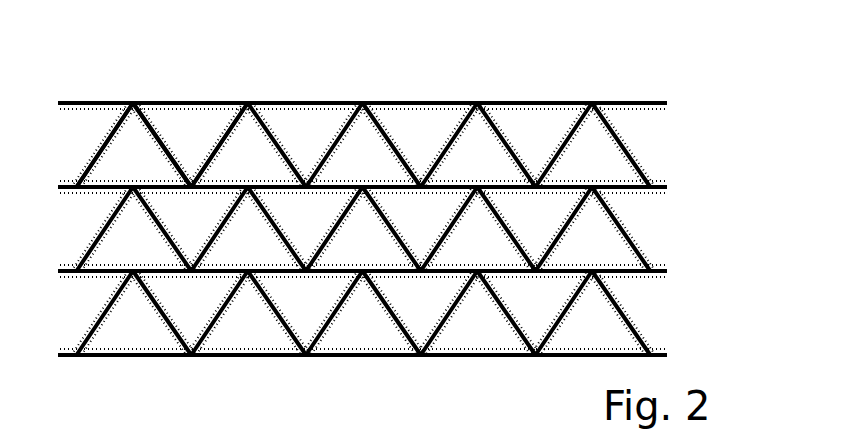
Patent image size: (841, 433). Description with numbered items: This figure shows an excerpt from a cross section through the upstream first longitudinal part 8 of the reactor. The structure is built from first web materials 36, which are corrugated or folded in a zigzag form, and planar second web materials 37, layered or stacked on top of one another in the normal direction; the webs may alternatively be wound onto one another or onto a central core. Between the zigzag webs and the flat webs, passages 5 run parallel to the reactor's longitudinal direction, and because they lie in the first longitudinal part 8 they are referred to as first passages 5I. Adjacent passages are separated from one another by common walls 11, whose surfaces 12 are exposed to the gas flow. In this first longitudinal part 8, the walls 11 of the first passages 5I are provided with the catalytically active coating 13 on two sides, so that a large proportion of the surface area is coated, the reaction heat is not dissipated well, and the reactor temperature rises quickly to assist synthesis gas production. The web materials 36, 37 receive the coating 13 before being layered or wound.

The first longitudinal part 8 is at (428, 91).
The planar second web material 37 is at (687, 101).
The first web material 36 is at (414, 236).
The passage 5 is at (364, 236).
The first passage 5I is at (337, 230).
The catalytically active coating 13 is at (113, 131).
The wall 11 is at (172, 138).
The surface 12 is at (218, 131).